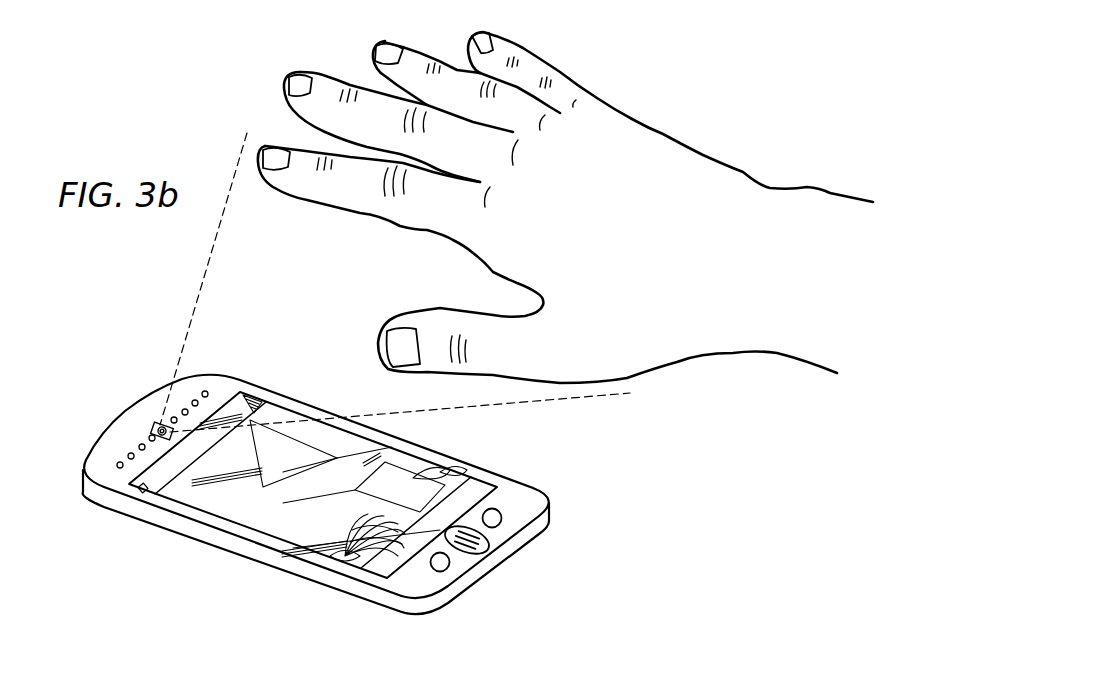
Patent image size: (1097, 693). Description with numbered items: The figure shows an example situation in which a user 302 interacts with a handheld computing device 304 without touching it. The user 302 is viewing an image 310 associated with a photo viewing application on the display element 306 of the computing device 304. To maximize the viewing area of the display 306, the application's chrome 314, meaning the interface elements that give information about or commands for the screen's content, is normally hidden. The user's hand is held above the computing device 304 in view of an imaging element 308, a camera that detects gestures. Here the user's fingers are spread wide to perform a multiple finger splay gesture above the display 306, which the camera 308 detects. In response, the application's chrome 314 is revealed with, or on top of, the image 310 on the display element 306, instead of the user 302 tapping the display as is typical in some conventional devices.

The user 302 is at (663, 156).
The computing device 304 is at (318, 502).
The display element 306 is at (338, 511).
The imaging element 308 is at (160, 424).
The image 310 is at (438, 471).
The chrome 314 is at (131, 484).